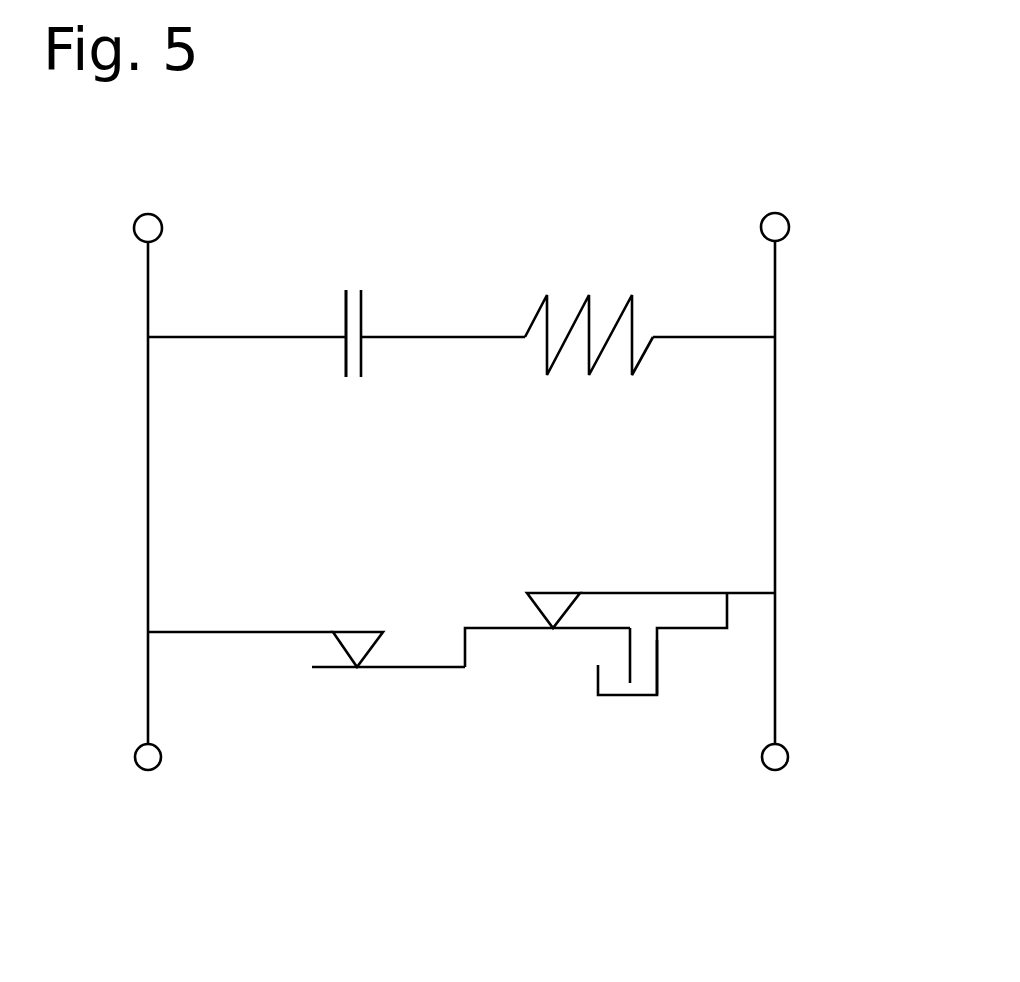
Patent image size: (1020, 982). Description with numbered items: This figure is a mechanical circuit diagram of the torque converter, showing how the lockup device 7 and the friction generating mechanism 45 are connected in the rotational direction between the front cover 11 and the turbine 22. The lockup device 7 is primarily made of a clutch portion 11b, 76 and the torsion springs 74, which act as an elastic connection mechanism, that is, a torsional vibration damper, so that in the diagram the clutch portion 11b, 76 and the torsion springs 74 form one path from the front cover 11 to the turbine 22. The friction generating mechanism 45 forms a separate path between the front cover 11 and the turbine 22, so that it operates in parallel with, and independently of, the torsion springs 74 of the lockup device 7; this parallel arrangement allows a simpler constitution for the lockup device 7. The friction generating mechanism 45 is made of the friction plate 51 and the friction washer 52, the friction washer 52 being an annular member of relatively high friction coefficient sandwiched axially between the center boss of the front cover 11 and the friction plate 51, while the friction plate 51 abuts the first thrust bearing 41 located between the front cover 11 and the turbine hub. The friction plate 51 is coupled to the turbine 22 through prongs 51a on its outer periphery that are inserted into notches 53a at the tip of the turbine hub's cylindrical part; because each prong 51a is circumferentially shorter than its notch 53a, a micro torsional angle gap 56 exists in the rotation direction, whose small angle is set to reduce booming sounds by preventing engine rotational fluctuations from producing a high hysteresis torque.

The lockup device 7 is at (487, 288).
The front cover 11 is at (148, 475).
The clutch portion 11b is at (343, 300).
The turbine 22 is at (775, 430).
The first thrust bearing 41 is at (553, 603).
The friction generating mechanism 45 is at (442, 710).
The friction plate 51 is at (395, 668).
The prong 51a is at (628, 644).
The friction washer 52 is at (355, 640).
The notch 53a is at (642, 672).
The micro torsional angle gap 56 is at (604, 694).
The torsion springs 74 is at (592, 313).
The clutch portion 76 is at (361, 313).